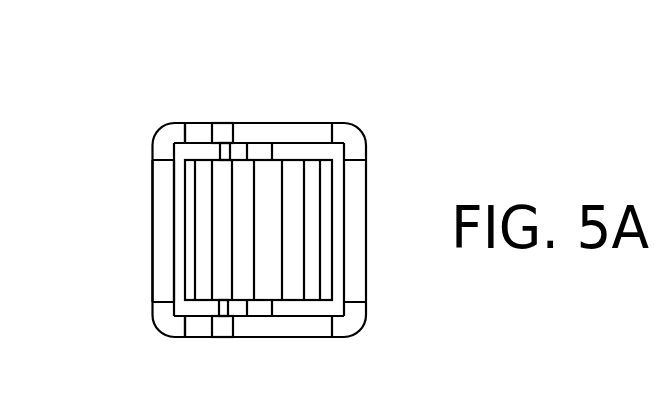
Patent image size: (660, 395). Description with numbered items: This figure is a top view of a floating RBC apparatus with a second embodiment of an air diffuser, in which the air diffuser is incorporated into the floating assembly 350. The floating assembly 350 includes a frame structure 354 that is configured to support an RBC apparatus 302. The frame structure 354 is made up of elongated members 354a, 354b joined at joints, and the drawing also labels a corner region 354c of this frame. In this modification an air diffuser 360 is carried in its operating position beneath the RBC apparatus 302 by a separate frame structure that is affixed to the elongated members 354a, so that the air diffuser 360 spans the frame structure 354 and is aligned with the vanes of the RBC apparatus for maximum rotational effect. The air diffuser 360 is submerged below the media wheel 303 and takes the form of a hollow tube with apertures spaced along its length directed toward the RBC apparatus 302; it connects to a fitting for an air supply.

The floating assembly 350 is at (257, 218).
The frame structure 354 is at (233, 218).
The elongated member 354a is at (193, 122).
The elongated member 354b is at (155, 225).
The frame corner member 354c is at (152, 321).
The RBC apparatus 302 is at (204, 158).
The media wheel 303 is at (290, 255).
The air diffuser 360 is at (215, 311).